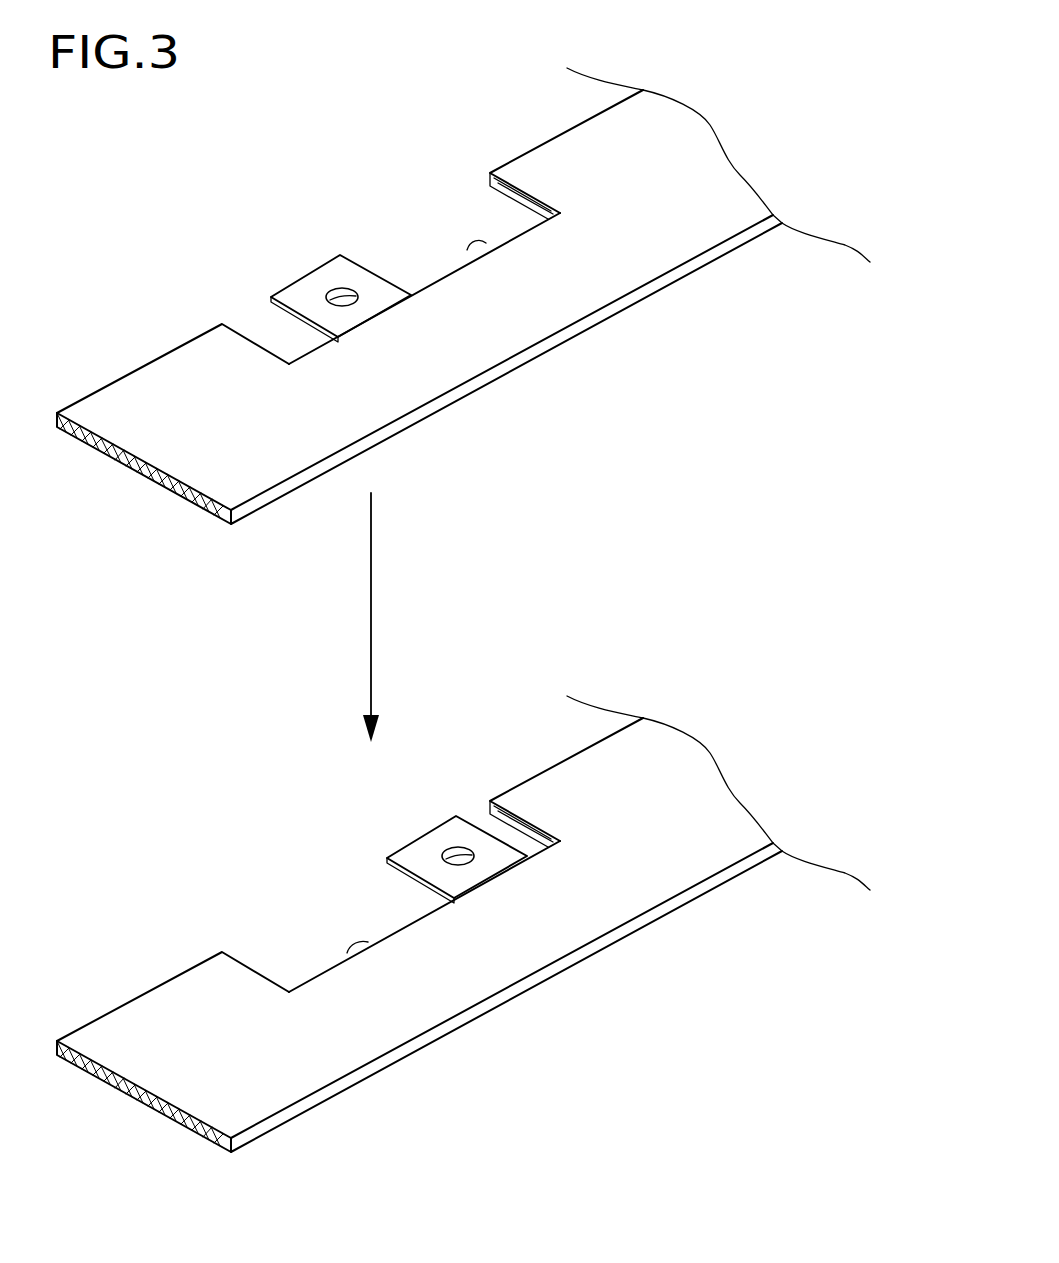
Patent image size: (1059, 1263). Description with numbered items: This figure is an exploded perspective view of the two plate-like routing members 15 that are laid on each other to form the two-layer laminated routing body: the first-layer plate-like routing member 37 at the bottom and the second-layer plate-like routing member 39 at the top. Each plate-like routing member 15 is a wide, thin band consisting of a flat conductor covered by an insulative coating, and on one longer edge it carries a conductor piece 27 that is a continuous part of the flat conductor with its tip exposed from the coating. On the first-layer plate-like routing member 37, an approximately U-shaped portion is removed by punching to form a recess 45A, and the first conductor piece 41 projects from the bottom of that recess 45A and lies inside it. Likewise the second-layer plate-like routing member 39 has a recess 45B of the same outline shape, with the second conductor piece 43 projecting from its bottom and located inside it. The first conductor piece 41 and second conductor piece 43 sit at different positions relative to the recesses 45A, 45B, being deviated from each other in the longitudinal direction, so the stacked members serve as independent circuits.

The plate-like routing member 15 is at (463, 623).
The conductor piece 27 is at (367, 537).
The first-layer plate-like routing member 37 is at (463, 924).
The second-layer plate-like routing member 39 is at (463, 309).
The first conductor piece 41 is at (425, 815).
The second conductor piece 43 is at (309, 256).
The recess 45A is at (368, 942).
The recess 45B is at (486, 243).